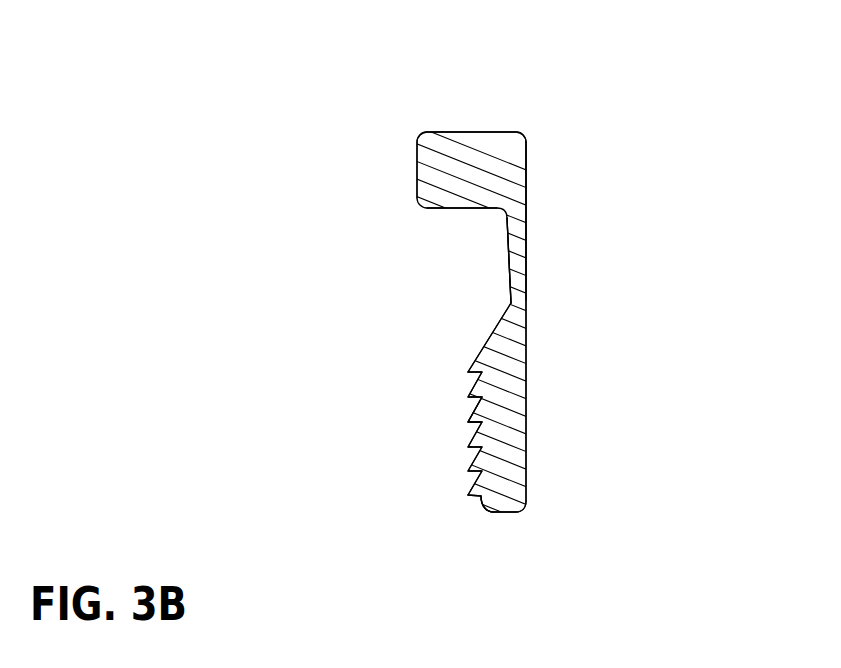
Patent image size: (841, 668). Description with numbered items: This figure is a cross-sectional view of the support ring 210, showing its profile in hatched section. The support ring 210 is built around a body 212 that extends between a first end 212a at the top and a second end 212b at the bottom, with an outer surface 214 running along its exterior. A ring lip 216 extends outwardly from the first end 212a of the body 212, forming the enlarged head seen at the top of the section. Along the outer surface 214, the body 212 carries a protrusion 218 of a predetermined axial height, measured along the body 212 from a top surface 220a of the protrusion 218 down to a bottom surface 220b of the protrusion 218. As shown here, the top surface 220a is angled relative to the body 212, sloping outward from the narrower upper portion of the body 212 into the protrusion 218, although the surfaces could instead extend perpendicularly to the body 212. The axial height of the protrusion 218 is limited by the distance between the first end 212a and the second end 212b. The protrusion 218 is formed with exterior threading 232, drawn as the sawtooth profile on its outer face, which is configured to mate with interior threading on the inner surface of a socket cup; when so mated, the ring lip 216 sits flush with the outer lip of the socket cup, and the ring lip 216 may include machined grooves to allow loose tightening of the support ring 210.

The support ring 210 is at (552, 95).
The body 212 is at (513, 287).
The first end 212a is at (493, 198).
The second end 212b is at (509, 507).
The outer surface 214 is at (507, 262).
The ring lip 216 is at (435, 173).
The protrusion 218 is at (497, 395).
The top surface 220a is at (490, 340).
The bottom surface 220b is at (485, 512).
The exterior threading 232 is at (477, 410).